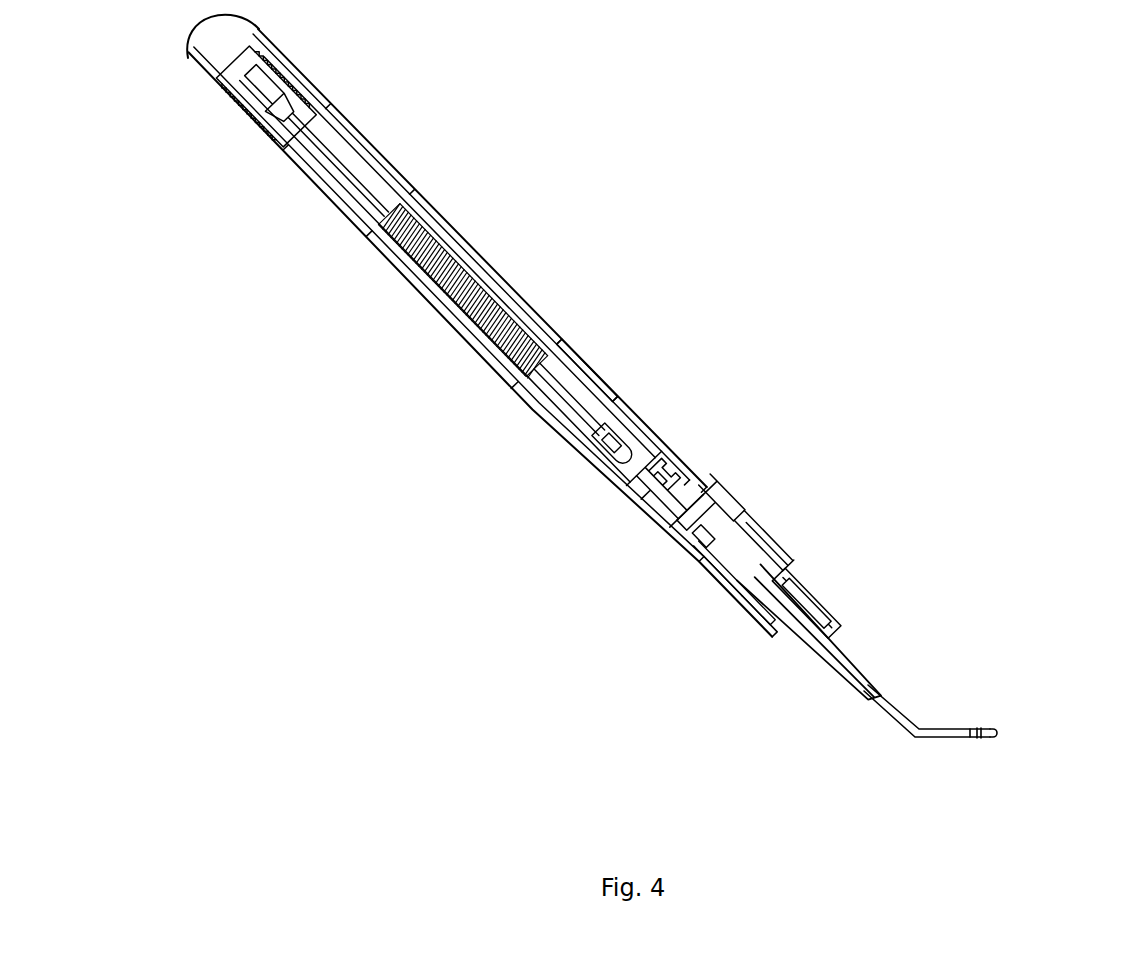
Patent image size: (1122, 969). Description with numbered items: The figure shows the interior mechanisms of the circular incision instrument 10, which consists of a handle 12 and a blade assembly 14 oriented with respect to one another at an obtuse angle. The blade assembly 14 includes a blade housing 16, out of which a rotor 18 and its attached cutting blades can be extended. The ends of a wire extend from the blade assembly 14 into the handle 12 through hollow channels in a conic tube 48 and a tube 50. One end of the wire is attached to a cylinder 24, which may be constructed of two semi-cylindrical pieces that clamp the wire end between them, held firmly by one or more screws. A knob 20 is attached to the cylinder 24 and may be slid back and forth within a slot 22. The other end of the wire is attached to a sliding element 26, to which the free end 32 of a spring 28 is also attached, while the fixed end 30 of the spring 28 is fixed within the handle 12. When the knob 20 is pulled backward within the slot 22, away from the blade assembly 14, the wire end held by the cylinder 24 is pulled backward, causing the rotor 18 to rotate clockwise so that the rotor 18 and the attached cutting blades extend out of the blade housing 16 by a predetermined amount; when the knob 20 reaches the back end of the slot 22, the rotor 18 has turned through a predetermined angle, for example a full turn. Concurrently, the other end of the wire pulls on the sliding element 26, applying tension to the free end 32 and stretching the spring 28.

The circular incision instrument 10 is at (682, 171).
The handle 12 is at (372, 148).
The blade assembly 14 is at (960, 713).
The blade housing 16 is at (992, 732).
The rotor 18 is at (967, 747).
The knob 20 is at (737, 501).
The slot 22 is at (706, 488).
The cylinder 24 is at (688, 512).
The sliding element 26 is at (462, 441).
The spring 28 is at (434, 290).
The fixed end 30 is at (279, 113).
The free end 32 is at (550, 378).
The conic tube 48 is at (852, 643).
The tube 50 is at (768, 551).